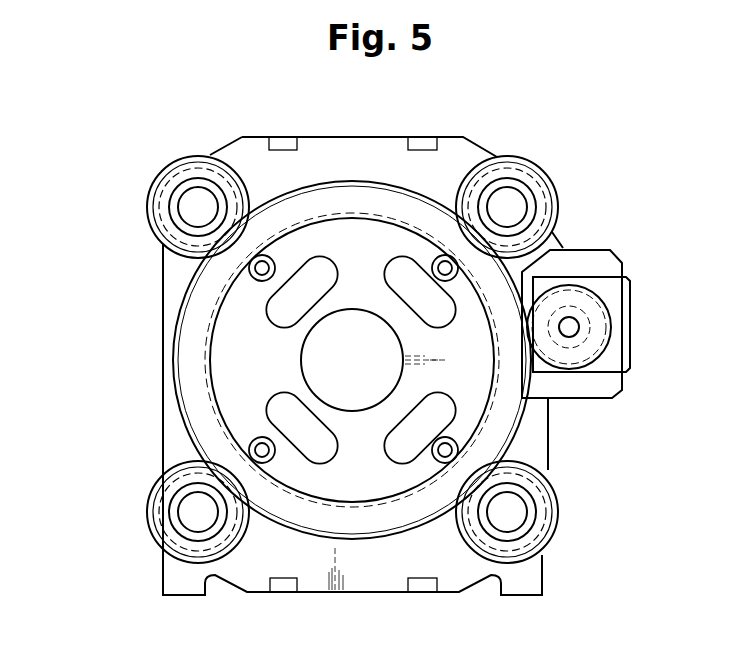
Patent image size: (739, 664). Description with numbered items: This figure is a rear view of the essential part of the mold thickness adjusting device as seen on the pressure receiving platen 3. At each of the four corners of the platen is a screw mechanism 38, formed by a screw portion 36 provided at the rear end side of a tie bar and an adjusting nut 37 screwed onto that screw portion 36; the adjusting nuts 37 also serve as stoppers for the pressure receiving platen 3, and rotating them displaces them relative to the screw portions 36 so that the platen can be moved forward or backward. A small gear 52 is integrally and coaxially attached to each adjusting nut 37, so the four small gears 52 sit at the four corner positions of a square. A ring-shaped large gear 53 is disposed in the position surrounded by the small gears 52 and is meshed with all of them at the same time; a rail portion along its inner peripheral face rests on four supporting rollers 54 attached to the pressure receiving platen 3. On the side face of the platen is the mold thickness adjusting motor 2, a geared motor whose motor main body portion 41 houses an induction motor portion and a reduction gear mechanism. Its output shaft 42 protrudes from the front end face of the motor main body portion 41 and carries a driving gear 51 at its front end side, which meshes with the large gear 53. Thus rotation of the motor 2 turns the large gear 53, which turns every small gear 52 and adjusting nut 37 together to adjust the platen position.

The mold thickness adjusting motor 2 is at (612, 336).
The pressure receiving platen 3 is at (245, 137).
The screw portion 36 is at (184, 221).
The adjusting nut 37 is at (188, 158).
The screw mechanism 38 is at (355, 366).
The motor main body portion 41 is at (633, 342).
The output shaft 42 is at (579, 322).
The driving gear 51 is at (595, 370).
The small gear 52 is at (160, 180).
The large gear 53 is at (173, 383).
The supporting roller 54 is at (270, 262).